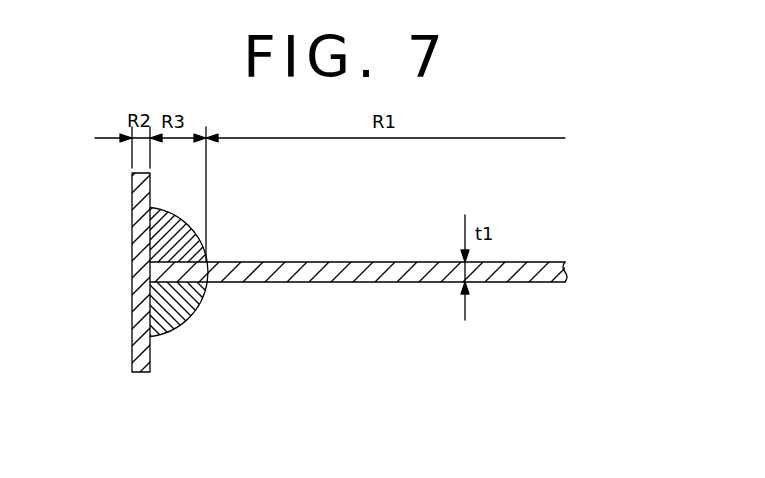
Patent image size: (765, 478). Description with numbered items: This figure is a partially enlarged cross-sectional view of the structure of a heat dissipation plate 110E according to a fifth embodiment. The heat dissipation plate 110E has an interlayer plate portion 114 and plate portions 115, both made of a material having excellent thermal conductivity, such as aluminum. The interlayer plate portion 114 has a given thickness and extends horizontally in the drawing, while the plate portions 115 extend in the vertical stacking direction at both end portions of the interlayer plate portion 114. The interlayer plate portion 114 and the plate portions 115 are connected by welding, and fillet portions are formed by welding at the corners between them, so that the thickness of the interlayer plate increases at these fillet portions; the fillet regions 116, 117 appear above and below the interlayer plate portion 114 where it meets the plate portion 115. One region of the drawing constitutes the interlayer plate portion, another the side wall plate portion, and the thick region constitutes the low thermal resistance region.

The heat dissipation plate 110E is at (118, 383).
The interlayer plate portion 114 is at (410, 273).
The plate portions 115 is at (141, 354).
The upper rounded portion 116 is at (186, 222).
The lower rounded portion 117 is at (190, 307).